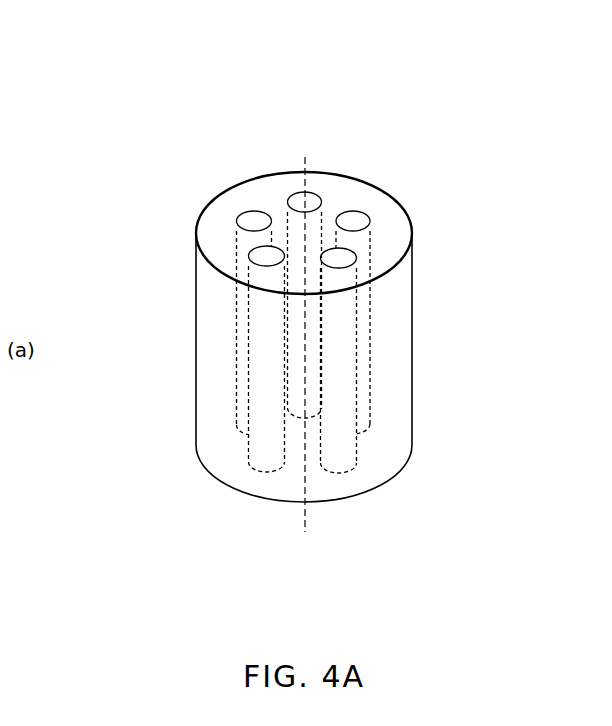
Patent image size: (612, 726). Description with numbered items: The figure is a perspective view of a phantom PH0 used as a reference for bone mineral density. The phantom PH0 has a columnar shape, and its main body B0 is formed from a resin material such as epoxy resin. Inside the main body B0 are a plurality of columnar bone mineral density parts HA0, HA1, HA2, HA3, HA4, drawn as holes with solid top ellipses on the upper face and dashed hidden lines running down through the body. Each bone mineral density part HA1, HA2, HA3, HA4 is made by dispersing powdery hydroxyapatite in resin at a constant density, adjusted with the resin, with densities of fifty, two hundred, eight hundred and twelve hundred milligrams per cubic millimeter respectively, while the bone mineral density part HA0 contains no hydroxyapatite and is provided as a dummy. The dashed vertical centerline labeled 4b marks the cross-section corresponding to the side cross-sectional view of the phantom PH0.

The phantom PH0 is at (259, 107).
The main body B0 is at (397, 236).
The bone mineral density part HA0 is at (237, 221).
The bone mineral density part HA1 is at (254, 249).
The bone mineral density part HA2 is at (356, 259).
The bone mineral density part HA3 is at (370, 221).
The bone mineral density part HA4 is at (320, 202).
The cross-section 4b is at (305, 348).